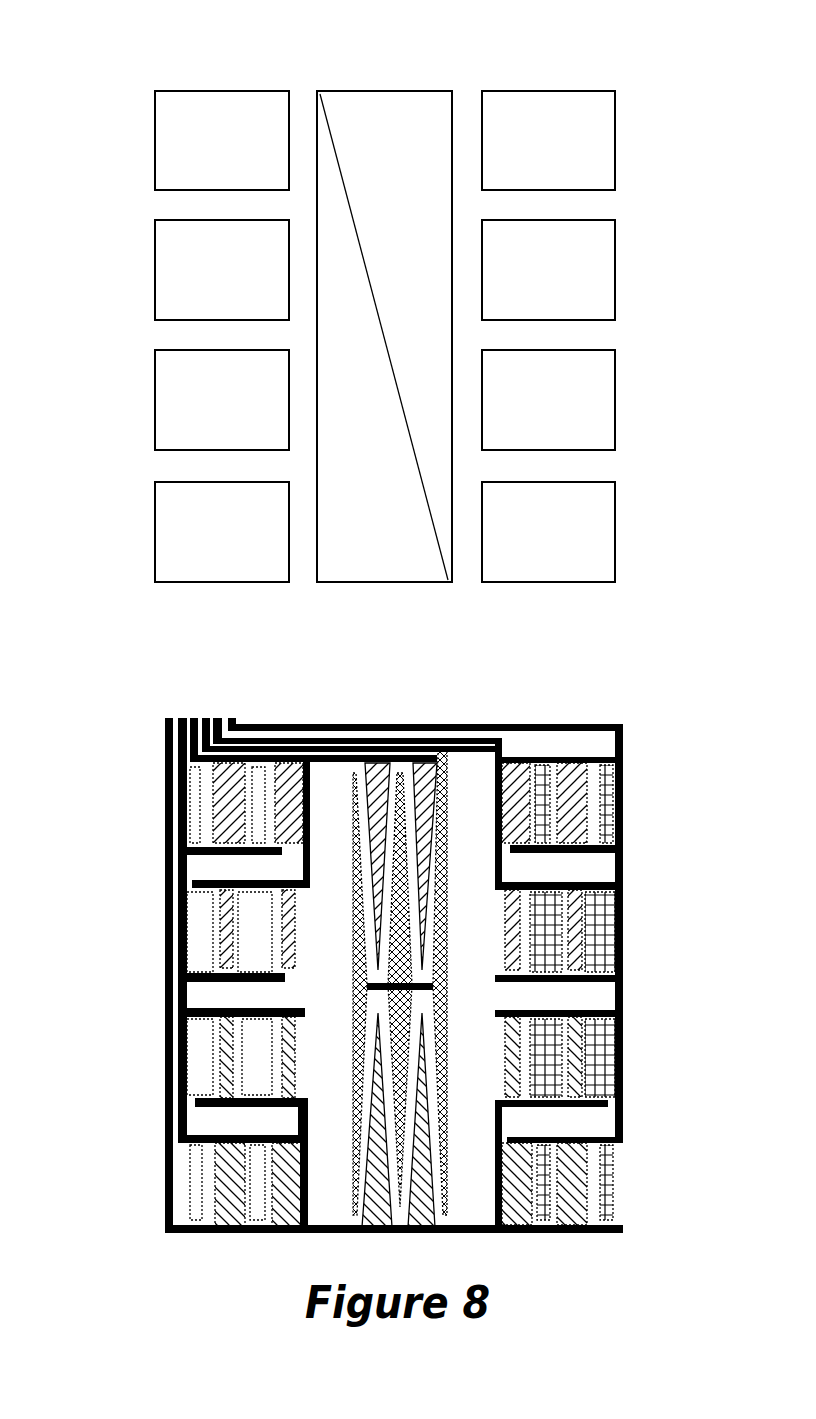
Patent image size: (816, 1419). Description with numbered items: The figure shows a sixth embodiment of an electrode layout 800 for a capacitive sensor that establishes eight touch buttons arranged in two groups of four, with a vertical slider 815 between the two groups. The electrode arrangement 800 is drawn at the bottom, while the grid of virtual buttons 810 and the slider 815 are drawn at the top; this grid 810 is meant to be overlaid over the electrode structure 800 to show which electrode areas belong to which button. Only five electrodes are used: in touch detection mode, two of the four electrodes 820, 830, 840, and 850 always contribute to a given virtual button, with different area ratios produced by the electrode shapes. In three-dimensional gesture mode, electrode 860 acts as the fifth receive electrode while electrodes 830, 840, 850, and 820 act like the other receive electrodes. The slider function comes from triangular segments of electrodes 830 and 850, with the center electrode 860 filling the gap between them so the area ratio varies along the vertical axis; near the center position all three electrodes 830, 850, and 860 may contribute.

The electrode layout 800 is at (228, 688).
The virtual buttons grid 810 is at (140, 73).
The vertical slider 815 is at (342, 70).
The electrode 820 is at (198, 833).
The electrode 830 is at (587, 792).
The electrode 840 is at (593, 930).
The electrode 850 is at (230, 1197).
The center electrode 860 is at (443, 1157).